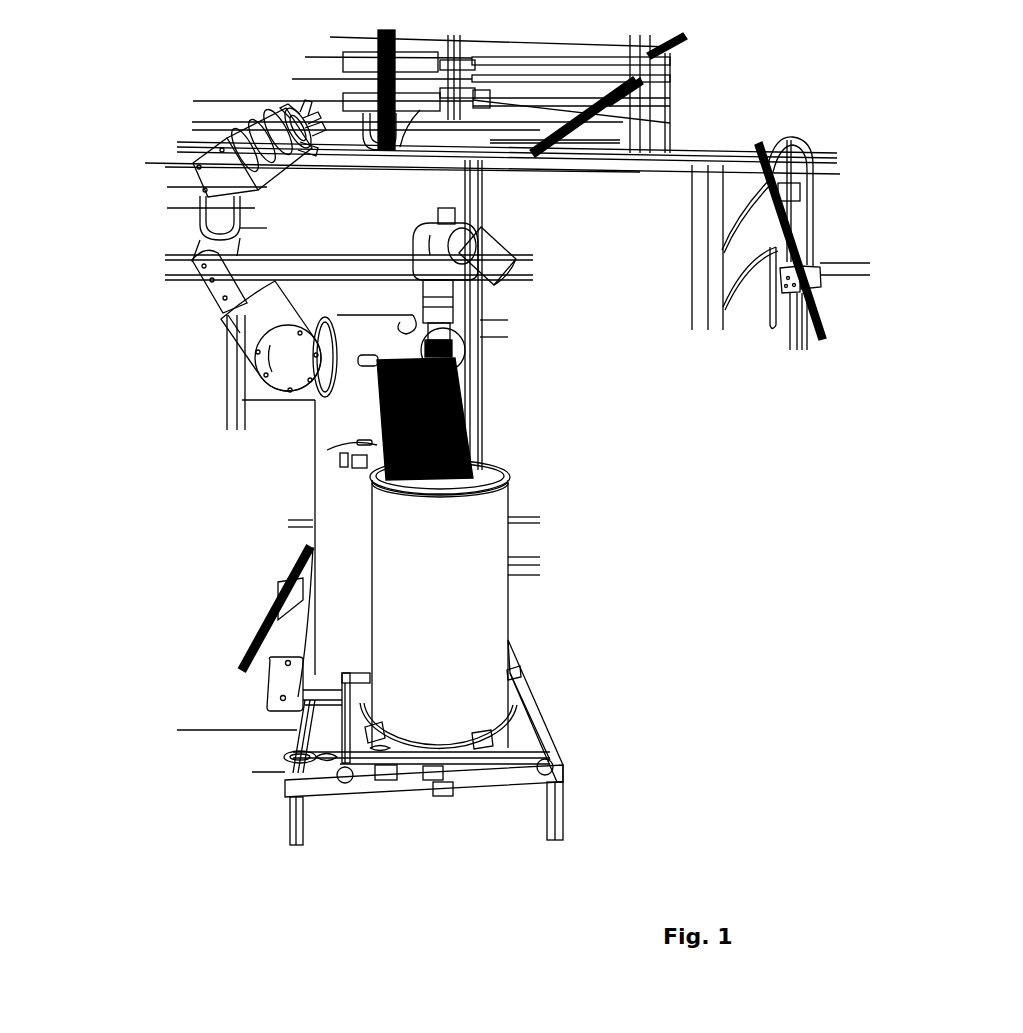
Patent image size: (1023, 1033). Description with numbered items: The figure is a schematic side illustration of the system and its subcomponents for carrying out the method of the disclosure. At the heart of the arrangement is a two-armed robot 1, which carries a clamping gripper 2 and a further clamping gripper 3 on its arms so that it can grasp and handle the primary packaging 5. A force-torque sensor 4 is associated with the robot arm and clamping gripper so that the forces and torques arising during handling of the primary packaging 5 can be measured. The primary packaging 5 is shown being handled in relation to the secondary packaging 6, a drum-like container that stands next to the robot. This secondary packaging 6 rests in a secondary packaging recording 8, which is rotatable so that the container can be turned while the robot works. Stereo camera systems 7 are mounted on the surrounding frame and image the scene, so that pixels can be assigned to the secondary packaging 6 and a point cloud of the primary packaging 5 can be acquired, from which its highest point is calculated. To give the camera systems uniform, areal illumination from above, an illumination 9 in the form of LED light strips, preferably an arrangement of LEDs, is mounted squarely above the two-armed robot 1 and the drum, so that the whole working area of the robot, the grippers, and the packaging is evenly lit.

The two-armed robot 1 is at (283, 372).
The clamping gripper 2 is at (450, 333).
The clamping gripper 3 is at (212, 170).
The force-torque sensor 4 is at (452, 290).
The primary packaging 5 is at (397, 410).
The secondary packaging 6 is at (423, 675).
The stereo camera systems 7 is at (670, 120).
The secondary packaging recording 8 is at (360, 775).
The illumination 9 is at (640, 92).